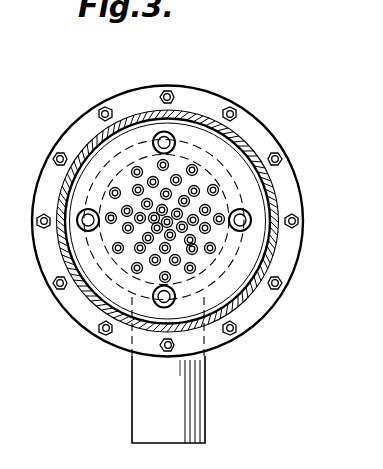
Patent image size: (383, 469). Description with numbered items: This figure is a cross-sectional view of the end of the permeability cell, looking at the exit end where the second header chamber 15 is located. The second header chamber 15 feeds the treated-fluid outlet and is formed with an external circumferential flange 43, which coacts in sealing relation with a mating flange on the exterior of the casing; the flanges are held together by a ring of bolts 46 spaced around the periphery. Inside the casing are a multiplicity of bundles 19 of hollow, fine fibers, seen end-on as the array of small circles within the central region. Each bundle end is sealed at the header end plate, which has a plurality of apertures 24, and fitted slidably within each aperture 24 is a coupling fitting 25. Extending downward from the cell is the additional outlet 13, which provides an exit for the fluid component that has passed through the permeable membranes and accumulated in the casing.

The outlet 13 is at (191, 405).
The second header chamber 15 is at (296, 268).
The bundles 19 is at (219, 190).
The aperture 24 is at (111, 188).
The coupling fitting 25 is at (138, 167).
The external circumferential flange 43 is at (260, 133).
The bolts 46 is at (231, 110).